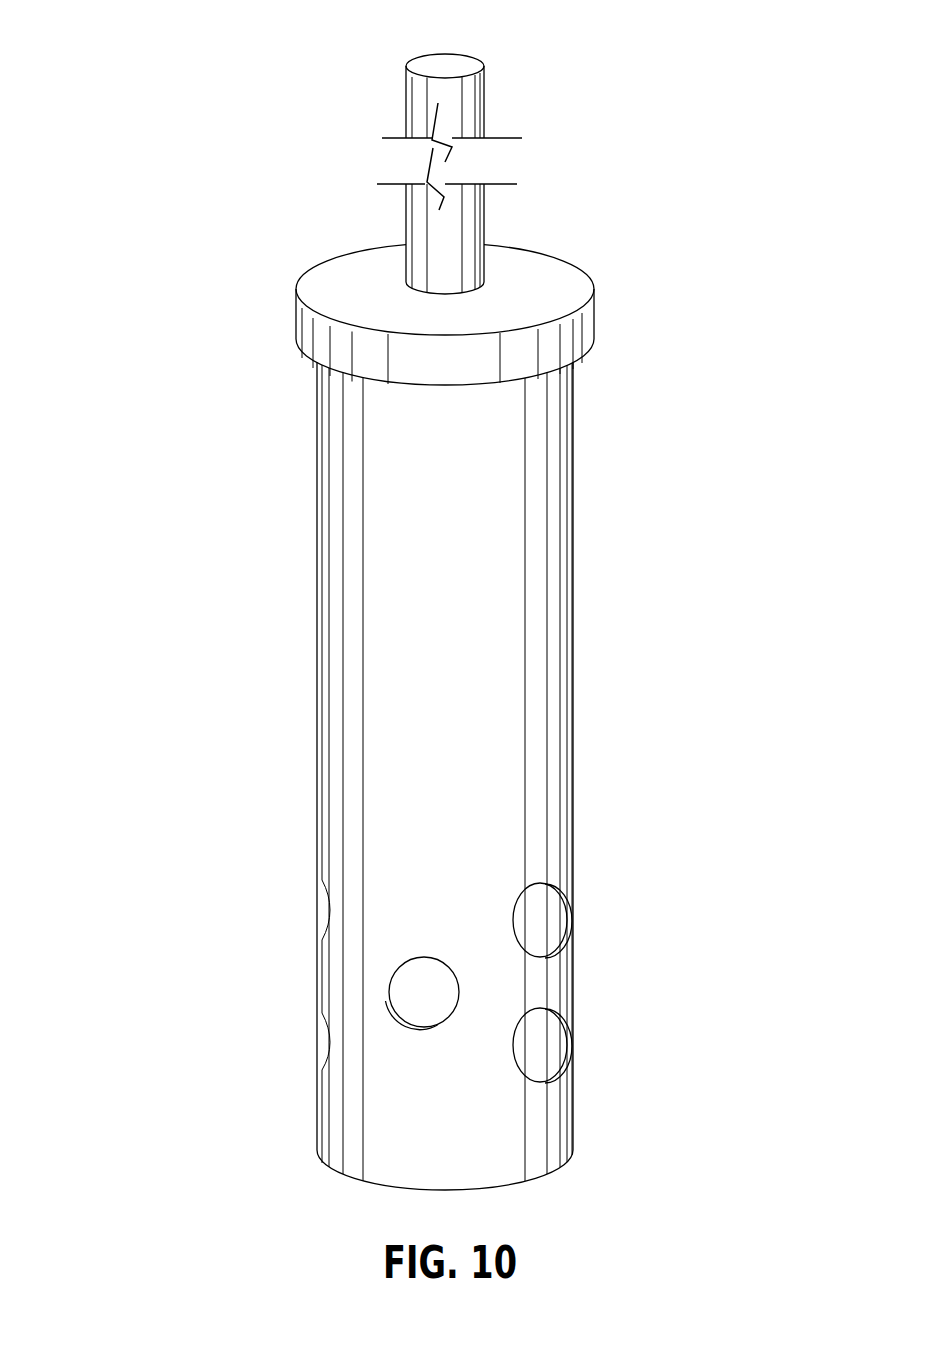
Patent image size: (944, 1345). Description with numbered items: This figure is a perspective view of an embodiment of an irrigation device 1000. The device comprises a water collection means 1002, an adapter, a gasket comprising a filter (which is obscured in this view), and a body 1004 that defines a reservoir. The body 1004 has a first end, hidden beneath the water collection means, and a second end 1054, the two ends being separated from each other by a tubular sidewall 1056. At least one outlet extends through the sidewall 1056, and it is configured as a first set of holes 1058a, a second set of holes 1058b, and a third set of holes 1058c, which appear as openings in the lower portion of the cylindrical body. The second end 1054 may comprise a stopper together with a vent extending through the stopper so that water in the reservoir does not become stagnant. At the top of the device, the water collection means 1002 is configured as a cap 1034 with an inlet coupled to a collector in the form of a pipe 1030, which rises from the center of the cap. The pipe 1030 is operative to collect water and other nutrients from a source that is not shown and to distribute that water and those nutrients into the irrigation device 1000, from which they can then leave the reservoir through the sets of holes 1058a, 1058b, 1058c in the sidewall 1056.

The irrigation device 1000 is at (690, 117).
The water collection means 1002 is at (264, 316).
The body 1004 is at (302, 707).
The pipe 1030 is at (430, 226).
The cap 1034 is at (388, 298).
The second end 1054 is at (549, 1183).
The tubular sidewall 1056 is at (475, 580).
The first set of holes 1058a is at (552, 915).
The second set of holes 1058b is at (414, 978).
The third set of holes 1058c is at (545, 1039).